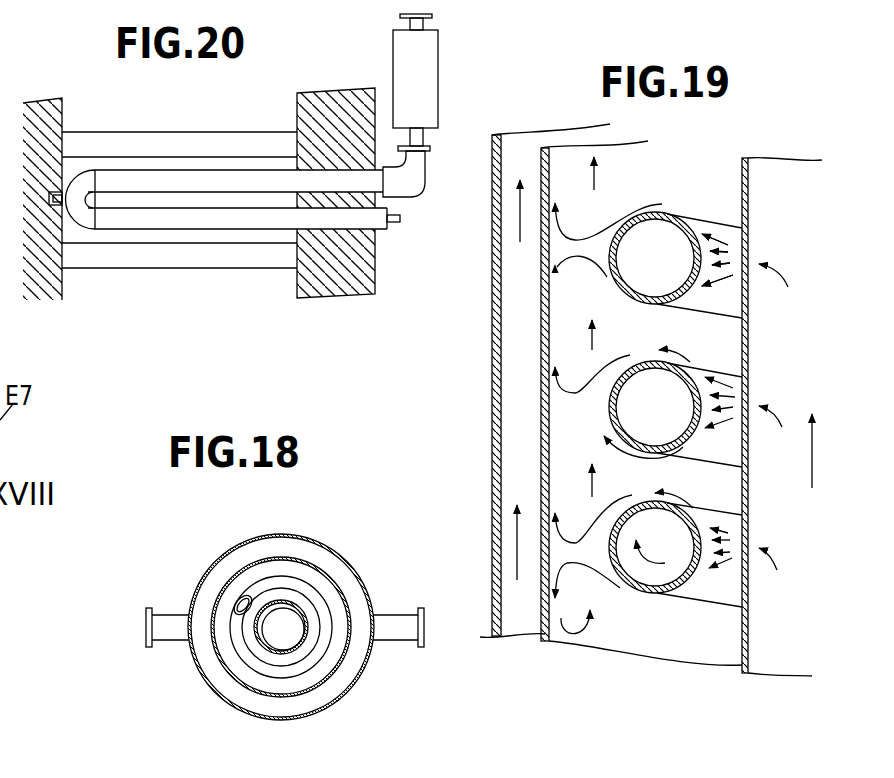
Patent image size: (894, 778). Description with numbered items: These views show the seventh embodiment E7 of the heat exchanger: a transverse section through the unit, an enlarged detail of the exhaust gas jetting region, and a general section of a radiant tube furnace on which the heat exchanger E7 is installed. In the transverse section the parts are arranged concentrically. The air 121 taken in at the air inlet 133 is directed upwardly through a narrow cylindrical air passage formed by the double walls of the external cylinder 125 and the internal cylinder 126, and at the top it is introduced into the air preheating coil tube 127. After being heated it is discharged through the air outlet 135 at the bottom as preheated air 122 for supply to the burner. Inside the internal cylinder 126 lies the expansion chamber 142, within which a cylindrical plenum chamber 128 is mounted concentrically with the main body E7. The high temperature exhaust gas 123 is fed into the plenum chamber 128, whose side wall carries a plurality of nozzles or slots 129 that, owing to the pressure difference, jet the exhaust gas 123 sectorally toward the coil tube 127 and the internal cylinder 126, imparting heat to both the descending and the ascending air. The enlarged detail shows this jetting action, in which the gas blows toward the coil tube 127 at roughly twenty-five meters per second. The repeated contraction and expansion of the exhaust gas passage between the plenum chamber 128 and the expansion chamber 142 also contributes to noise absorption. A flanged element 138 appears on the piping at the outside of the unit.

In FIG. 20, the seventh embodiment heat exchanger E7 is at (438, 55).
In FIG. 19, the air 121 is at (513, 535).
In FIG. 19, the preheated air 122 is at (646, 560).
In FIG. 19, the high temperature exhaust gas 123 is at (830, 462).
In FIG. 19, the external cylinder 125 is at (492, 255).
In FIG. 18, the external cylinder 125 is at (313, 539).
In FIG. 19, the internal cylinder 126 is at (541, 320).
In FIG. 18, the internal cylinder 126 is at (342, 588).
In FIG. 19, the air preheating coil tube 127 is at (666, 213).
In FIG. 18, the air preheating coil tube 127 is at (267, 577).
In FIG. 19, the plenum chamber 128 is at (748, 347).
In FIG. 18, the plenum chamber 128 is at (297, 650).
In FIG. 19, the nozzles or slots 129 is at (748, 257).
In FIG. 18, the nozzles or slots 129 is at (266, 647).
In FIG. 18, the air inlet 133 is at (168, 614).
In FIG. 18, the air outlet 135 is at (400, 615).
In FIG. 18, the flange 138 is at (146, 633).
In FIG. 19, the expansion chamber 142 is at (718, 651).
In FIG. 18, the expansion chamber 142 is at (341, 651).